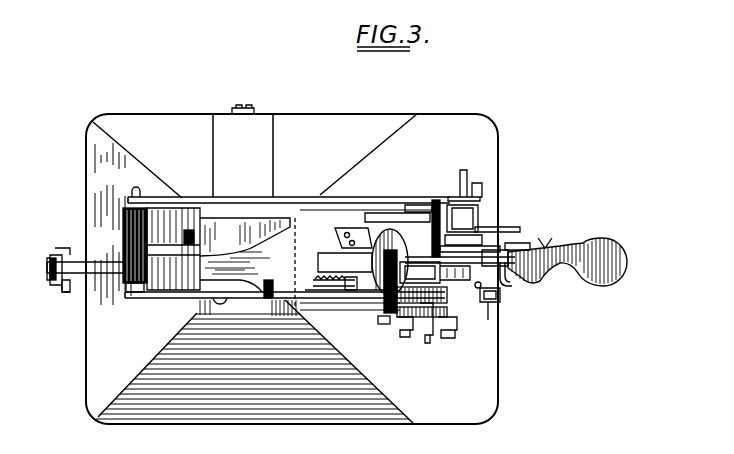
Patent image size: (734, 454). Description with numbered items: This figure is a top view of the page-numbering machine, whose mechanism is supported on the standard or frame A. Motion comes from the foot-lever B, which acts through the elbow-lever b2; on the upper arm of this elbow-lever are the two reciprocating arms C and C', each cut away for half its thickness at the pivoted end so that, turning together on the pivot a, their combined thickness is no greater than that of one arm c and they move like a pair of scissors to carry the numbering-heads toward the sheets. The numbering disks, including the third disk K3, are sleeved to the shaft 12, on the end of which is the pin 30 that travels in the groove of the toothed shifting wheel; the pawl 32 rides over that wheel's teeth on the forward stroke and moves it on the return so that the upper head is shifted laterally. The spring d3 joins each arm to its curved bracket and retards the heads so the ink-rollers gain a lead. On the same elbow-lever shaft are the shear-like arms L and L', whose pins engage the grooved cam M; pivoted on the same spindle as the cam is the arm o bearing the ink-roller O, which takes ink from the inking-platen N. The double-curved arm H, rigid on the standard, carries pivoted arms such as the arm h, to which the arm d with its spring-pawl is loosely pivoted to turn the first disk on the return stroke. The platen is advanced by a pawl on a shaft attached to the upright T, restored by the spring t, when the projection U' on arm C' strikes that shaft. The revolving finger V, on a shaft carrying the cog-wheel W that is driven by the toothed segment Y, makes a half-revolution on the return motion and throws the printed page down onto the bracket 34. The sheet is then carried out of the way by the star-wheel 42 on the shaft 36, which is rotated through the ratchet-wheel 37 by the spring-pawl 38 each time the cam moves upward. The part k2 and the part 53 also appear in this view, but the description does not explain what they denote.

The inking arm L is at (289, 188).
The inking arm L' is at (370, 191).
The bracket arm k2 is at (372, 232).
The pivoted arm h is at (408, 230).
The cam M is at (436, 210).
The spring-pawl 38 is at (463, 195).
The ratchet-wheel 37 is at (476, 229).
The shaft 36 is at (497, 238).
The ink-roller arm o is at (498, 248).
The star-wheel 42 is at (512, 243).
The ink-roller O is at (505, 258).
The revolving finger V is at (549, 239).
The bracket 34 is at (546, 260).
The foot-lever B is at (591, 278).
The cog-wheel W is at (540, 306).
The toothed segment Y is at (472, 290).
The shaft 12 is at (452, 300).
The pin 30 is at (440, 320).
The spring d3 is at (413, 330).
The pawl 32 is at (395, 320).
The numbering disk K3 is at (390, 310).
The double-curved arm H is at (365, 303).
The upright T is at (353, 286).
The spring t is at (326, 282).
The inking-platen N is at (340, 248).
The bracket 53 is at (315, 266).
The standard A is at (294, 240).
The pivot a is at (123, 241).
The elbow-lever b2 is at (51, 280).
The arm thickness c is at (63, 286).
The reciprocating arm C is at (184, 327).
The reciprocating arm C' is at (185, 314).
The projection U' is at (268, 299).
The arm d is at (463, 225).